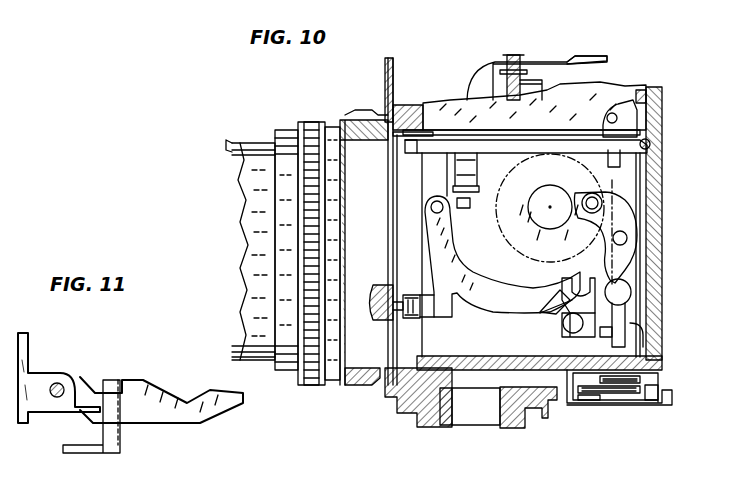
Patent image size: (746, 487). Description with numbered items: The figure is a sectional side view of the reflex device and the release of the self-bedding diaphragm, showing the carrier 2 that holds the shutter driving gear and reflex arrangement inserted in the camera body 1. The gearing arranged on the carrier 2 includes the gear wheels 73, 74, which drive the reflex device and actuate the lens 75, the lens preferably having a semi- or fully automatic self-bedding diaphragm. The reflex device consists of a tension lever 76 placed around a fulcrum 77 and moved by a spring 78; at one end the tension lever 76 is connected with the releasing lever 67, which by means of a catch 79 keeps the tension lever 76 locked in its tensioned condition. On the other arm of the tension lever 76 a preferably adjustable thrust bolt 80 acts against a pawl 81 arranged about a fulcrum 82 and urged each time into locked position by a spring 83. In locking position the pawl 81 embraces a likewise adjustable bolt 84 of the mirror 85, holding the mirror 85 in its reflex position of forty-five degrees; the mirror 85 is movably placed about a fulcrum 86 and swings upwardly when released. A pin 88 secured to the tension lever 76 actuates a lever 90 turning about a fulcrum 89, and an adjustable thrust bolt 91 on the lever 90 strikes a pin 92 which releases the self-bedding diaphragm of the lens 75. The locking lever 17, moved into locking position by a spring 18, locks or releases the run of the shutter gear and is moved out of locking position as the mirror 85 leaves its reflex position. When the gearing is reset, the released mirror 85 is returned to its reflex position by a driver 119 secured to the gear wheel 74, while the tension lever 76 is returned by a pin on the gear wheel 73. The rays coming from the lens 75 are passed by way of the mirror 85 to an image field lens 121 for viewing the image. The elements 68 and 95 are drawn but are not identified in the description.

In FIG. 10, the camera body 1 is at (447, 405).
In FIG. 10, the carrier 2 is at (427, 367).
In FIG. 10, the locking lever 17 is at (571, 60).
In FIG. 10, the spring 18 is at (507, 65).
In FIG. 11, the releasing lever 67 is at (24, 360).
In FIG. 11, the pin 68 is at (55, 398).
In FIG. 10, the gear wheel 73 is at (641, 97).
In FIG. 10, the gear wheel 74 is at (500, 165).
In FIG. 10, the lens 75 is at (300, 178).
In FIG. 10, the tension lever 76 is at (620, 167).
In FIG. 11, the tension lever 76 is at (115, 425).
In FIG. 10, the fulcrum 77 is at (613, 388).
In FIG. 10, the spring 78 is at (630, 340).
In FIG. 11, the catch 79 is at (132, 390).
In FIG. 10, the thrust bolt 80 is at (600, 383).
In FIG. 10, the pawl 81 is at (573, 340).
In FIG. 10, the fulcrum 82 is at (603, 330).
In FIG. 10, the spring 83 is at (557, 320).
In FIG. 10, the bolt 84 is at (440, 253).
In FIG. 10, the mirror 85 is at (382, 120).
In FIG. 10, the fulcrum 86 is at (623, 117).
In FIG. 10, the pin 88 is at (513, 213).
In FIG. 10, the fulcrum 89 is at (417, 230).
In FIG. 10, the lever 90 is at (337, 217).
In FIG. 10, the thrust bolt 91 is at (408, 320).
In FIG. 10, the pin 92 is at (390, 320).
In FIG. 10, the spring contact 95 is at (617, 360).
In FIG. 10, the driver 119 is at (540, 178).
In FIG. 10, the image field lens 121 is at (470, 155).